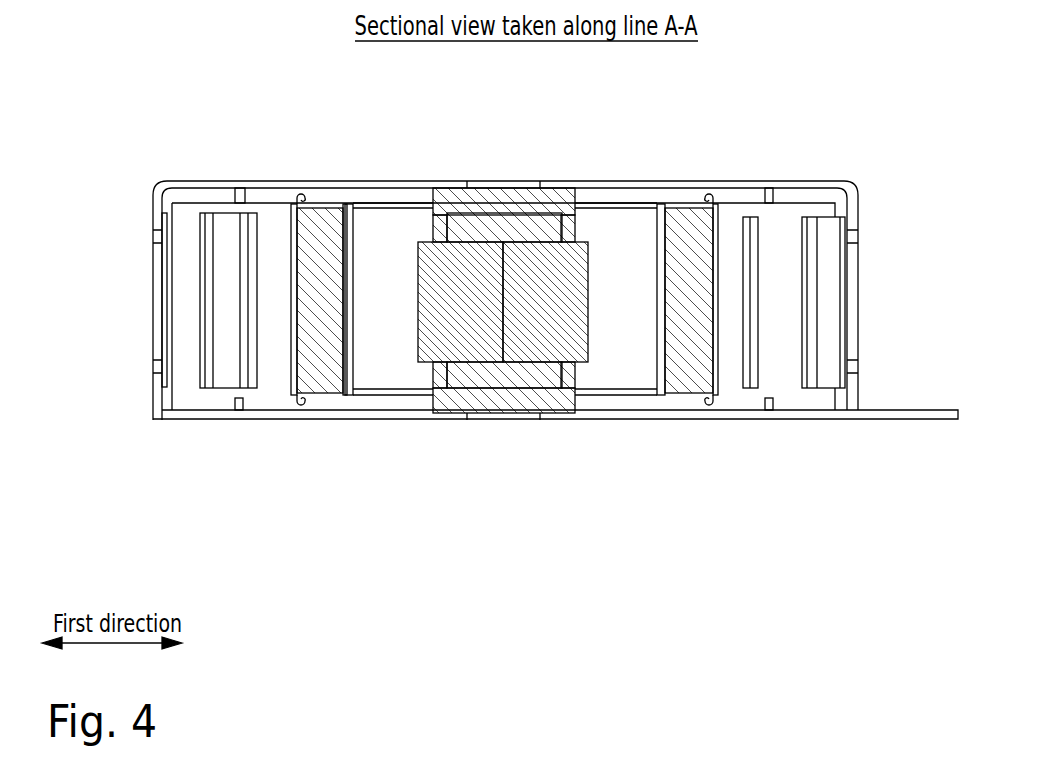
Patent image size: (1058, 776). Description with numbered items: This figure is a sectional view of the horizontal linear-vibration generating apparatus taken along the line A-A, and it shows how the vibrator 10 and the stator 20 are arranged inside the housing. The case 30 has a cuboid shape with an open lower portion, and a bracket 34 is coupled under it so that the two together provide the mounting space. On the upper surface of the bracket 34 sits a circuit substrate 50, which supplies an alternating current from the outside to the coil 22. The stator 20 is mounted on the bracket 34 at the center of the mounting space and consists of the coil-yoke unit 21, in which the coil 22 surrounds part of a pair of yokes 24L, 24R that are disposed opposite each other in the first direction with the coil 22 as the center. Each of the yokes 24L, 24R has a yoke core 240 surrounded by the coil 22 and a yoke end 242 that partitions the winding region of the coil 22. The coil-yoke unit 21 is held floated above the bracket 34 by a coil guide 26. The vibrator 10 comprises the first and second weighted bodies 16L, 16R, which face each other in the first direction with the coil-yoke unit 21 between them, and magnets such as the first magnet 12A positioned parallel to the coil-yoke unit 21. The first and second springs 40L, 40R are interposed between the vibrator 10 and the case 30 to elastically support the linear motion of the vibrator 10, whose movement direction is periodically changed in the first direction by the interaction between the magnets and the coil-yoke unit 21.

The vibrator 10 is at (295, 120).
The first magnet 12A is at (393, 237).
The first weighted body 16L is at (323, 222).
The second weighted body 16R is at (690, 220).
The stator 20 is at (263, 603).
The coil-yoke unit 21 is at (383, 548).
The coil 22 is at (495, 377).
The yoke 24L is at (472, 490).
The yoke 24R is at (592, 490).
The yoke core 240 is at (443, 352).
The yoke end 242 is at (428, 376).
The coil guide 26 is at (505, 200).
The case 30 is at (852, 202).
The bracket 34 is at (246, 424).
The first spring 40L is at (203, 378).
The second spring 40R is at (803, 372).
The circuit substrate 50 is at (930, 410).